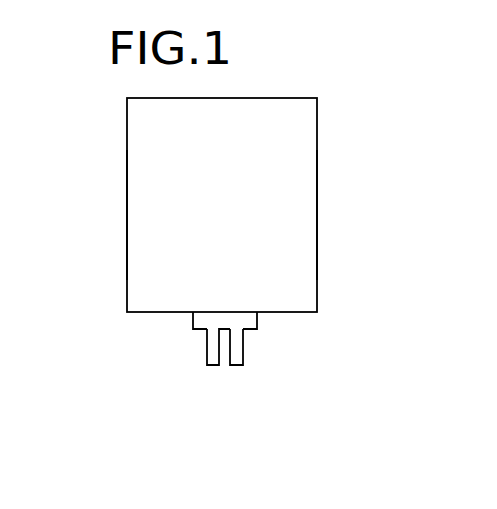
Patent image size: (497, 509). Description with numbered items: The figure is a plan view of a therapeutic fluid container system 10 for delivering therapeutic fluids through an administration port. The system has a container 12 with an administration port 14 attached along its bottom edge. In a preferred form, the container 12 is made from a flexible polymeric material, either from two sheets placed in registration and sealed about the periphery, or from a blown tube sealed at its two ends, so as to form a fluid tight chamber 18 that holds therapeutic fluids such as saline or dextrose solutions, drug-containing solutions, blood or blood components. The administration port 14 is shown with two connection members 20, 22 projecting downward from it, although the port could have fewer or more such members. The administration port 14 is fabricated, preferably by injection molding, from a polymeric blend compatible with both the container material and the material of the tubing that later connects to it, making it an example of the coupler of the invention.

The therapeutic fluid container system 10 is at (344, 141).
The container 12 is at (317, 219).
The administration port 14 is at (258, 323).
The fluid tight chamber 18 is at (127, 209).
The connection member 20 is at (207, 353).
The connection member 22 is at (243, 356).